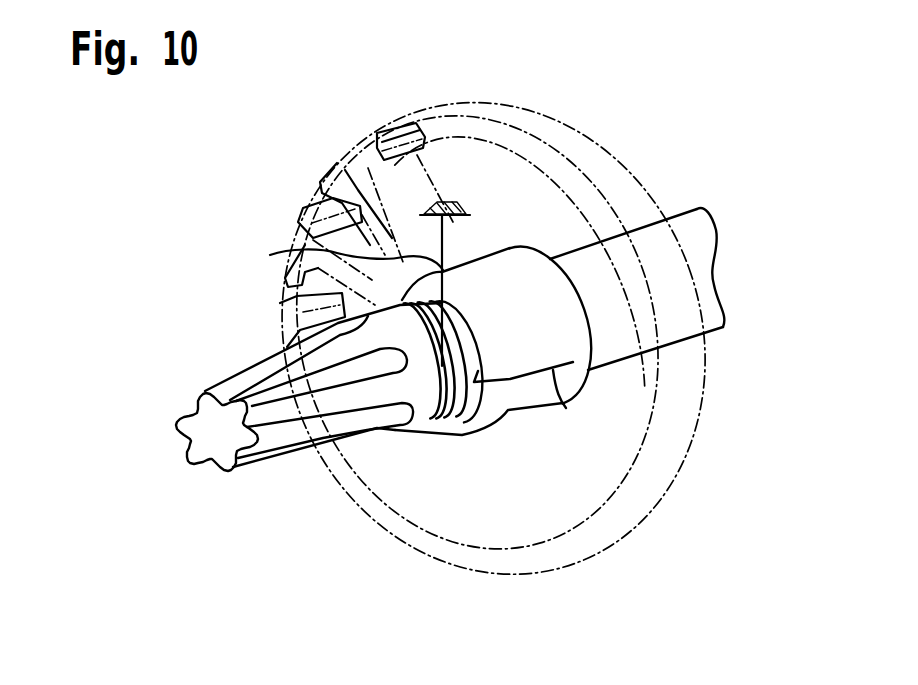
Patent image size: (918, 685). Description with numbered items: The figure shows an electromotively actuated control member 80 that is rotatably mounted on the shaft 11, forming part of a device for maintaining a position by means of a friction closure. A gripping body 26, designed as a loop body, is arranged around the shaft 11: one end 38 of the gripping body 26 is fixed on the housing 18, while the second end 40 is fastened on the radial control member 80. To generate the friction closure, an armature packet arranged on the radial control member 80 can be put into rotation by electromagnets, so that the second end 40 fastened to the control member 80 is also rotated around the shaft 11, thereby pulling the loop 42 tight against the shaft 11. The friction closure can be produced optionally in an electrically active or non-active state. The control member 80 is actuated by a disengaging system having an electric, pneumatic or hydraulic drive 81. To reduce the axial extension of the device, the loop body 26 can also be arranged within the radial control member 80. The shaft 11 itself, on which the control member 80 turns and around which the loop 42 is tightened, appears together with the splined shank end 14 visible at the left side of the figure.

The shaft 11 is at (703, 229).
The spline / tool shank 14 is at (203, 420).
The housing 18 is at (423, 212).
The gripping body 26 is at (443, 402).
The end of the gripping body 38 is at (270, 255).
The second end 40 is at (566, 408).
The loop 42 is at (427, 421).
The control member 80 is at (518, 264).
The drive 81 is at (470, 130).